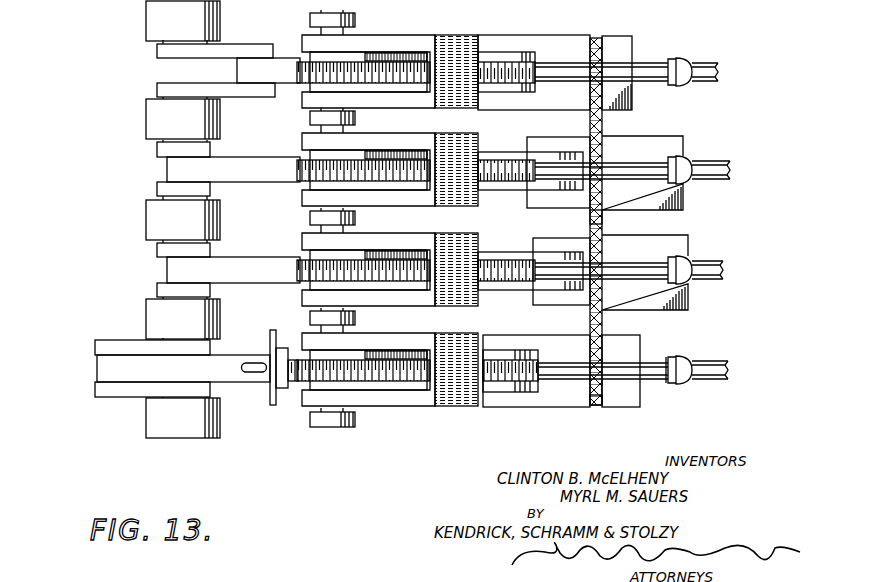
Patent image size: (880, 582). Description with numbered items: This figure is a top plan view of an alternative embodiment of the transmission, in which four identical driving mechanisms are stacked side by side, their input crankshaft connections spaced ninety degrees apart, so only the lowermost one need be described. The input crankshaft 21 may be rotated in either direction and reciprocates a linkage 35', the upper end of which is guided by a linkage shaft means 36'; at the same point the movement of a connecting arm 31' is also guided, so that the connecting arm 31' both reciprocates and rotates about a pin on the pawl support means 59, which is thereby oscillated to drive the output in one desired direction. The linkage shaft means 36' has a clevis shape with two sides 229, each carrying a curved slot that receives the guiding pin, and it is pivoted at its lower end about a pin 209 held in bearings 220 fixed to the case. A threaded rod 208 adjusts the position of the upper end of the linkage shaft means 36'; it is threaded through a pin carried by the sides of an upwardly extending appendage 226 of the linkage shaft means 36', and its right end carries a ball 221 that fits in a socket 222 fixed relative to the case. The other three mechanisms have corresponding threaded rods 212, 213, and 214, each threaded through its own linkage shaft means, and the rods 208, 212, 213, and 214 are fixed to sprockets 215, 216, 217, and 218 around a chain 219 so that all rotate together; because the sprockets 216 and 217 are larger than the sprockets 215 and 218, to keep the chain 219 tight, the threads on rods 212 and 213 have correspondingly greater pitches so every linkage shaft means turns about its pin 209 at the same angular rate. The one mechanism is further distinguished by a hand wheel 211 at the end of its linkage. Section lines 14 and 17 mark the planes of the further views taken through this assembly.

The section line 14- 14 is at (572, 370).
The section line 17- 17 is at (663, 27).
The crankshaft 21 is at (176, 446).
The linkage 35' is at (183, 395).
The linkage shaft means 36' is at (456, 240).
The connecting arm 31' is at (530, 251).
The pawl support means 59 is at (557, 342).
The threaded rod 208 is at (648, 366).
The pin 209 is at (328, 331).
The hand wheel 211 is at (266, 340).
The threaded rod 212 is at (635, 268).
The threaded rod 213 is at (650, 166).
The threaded rod 214 is at (619, 66).
The sprocket 215 is at (597, 404).
The sprocket 216 is at (590, 252).
The sprocket 217 is at (590, 153).
The sprocket 218 is at (594, 38).
The chain 219 is at (598, 218).
The bearings 220 is at (310, 320).
The ball 221 is at (667, 385).
The socket 222 is at (682, 362).
The appendage 226 is at (476, 333).
The sides 229 is at (408, 338).